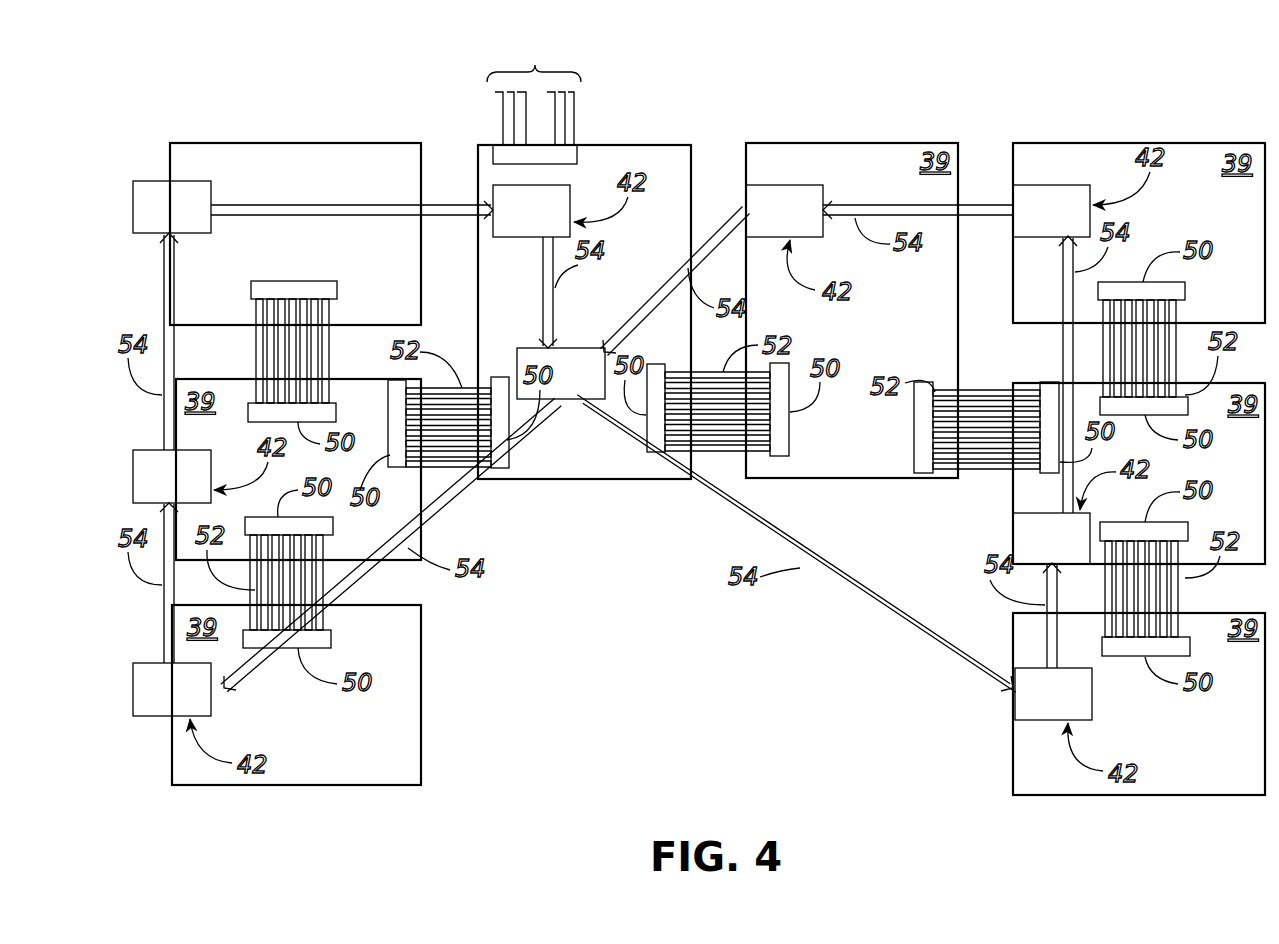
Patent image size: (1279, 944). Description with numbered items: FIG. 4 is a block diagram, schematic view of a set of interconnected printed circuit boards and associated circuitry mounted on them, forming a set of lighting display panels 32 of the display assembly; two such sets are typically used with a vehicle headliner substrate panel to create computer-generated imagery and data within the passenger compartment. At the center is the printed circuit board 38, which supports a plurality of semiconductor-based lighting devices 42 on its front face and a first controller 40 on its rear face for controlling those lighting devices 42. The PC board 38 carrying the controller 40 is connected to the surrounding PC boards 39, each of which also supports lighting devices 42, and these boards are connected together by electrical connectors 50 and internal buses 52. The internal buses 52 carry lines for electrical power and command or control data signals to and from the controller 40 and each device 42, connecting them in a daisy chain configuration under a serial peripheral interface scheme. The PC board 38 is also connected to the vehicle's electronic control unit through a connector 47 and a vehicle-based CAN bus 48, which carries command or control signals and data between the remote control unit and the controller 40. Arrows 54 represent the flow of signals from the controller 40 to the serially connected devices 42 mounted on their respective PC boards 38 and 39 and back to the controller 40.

The first set of lighting display panels 32 is at (852, 62).
The printed circuit board 38 is at (584, 312).
The printed circuit boards 39 is at (295, 234).
The first controller 40 is at (575, 345).
The semiconductor-based lighting devices 42 is at (150, 178).
The connector 47 is at (578, 156).
The CAN bus 48 is at (535, 64).
The electrical connectors 50 is at (296, 281).
The internal buses 52 is at (258, 352).
The arrows 54 is at (280, 205).